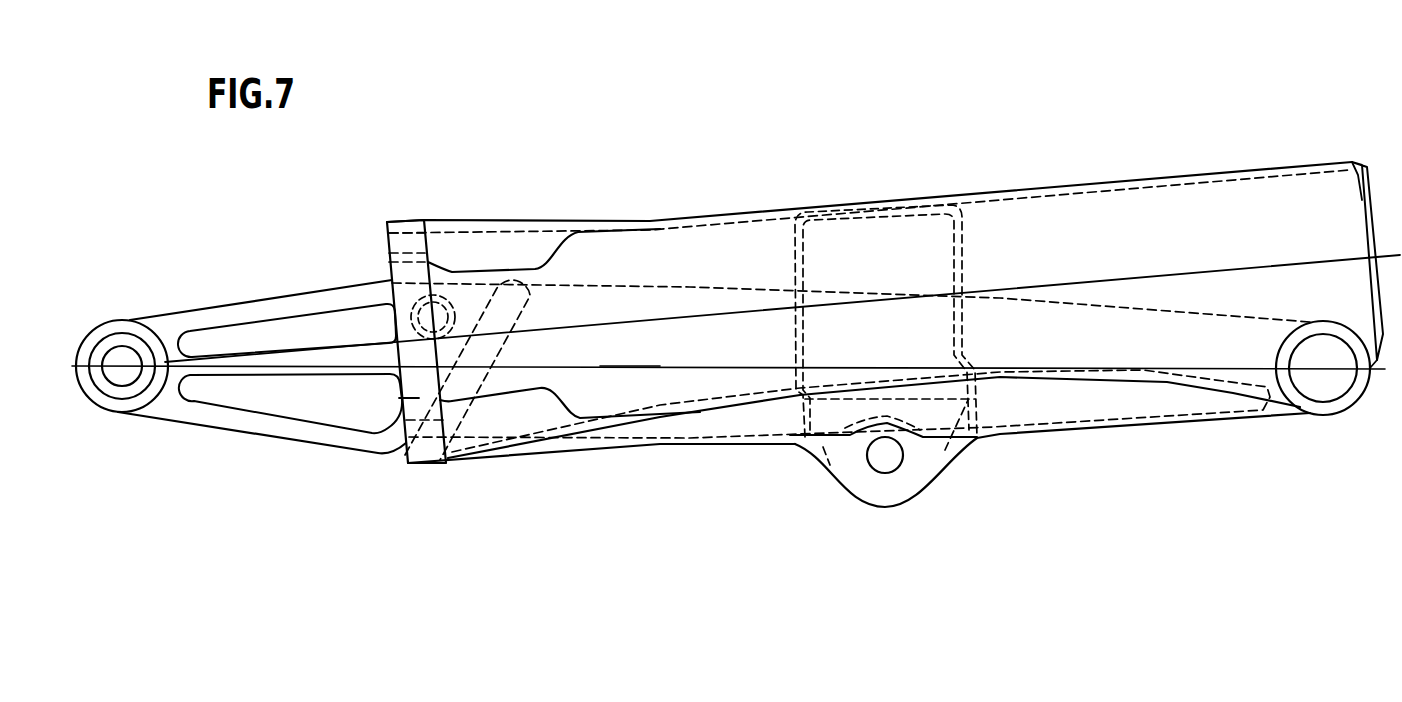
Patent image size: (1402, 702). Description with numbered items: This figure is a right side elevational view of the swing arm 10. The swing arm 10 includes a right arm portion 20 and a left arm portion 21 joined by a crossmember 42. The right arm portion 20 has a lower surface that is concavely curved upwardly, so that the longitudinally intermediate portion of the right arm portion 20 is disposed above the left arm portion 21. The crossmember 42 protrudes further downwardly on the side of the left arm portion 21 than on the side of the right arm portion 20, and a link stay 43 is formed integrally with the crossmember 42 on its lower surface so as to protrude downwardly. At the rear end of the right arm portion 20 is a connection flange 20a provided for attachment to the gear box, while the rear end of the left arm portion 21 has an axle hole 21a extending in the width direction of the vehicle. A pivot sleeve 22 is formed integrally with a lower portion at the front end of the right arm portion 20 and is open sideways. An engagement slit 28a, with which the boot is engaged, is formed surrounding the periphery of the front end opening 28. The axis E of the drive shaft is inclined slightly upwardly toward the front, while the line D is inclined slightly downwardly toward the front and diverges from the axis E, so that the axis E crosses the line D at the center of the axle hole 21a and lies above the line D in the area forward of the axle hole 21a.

The swing arm 10 is at (613, 193).
The right arm portion 20 is at (727, 248).
The connection flange 20a is at (430, 253).
The left arm portion 21 is at (707, 430).
The axle hole 21a is at (124, 373).
The pivot sleeve 22 is at (1322, 407).
The front end opening 28 is at (1367, 180).
The engagement slit 28a is at (1362, 202).
The crossmember 42 is at (983, 243).
The link stay 43 is at (925, 478).
The line D is at (630, 367).
The axis of the drive shaft E is at (1182, 267).